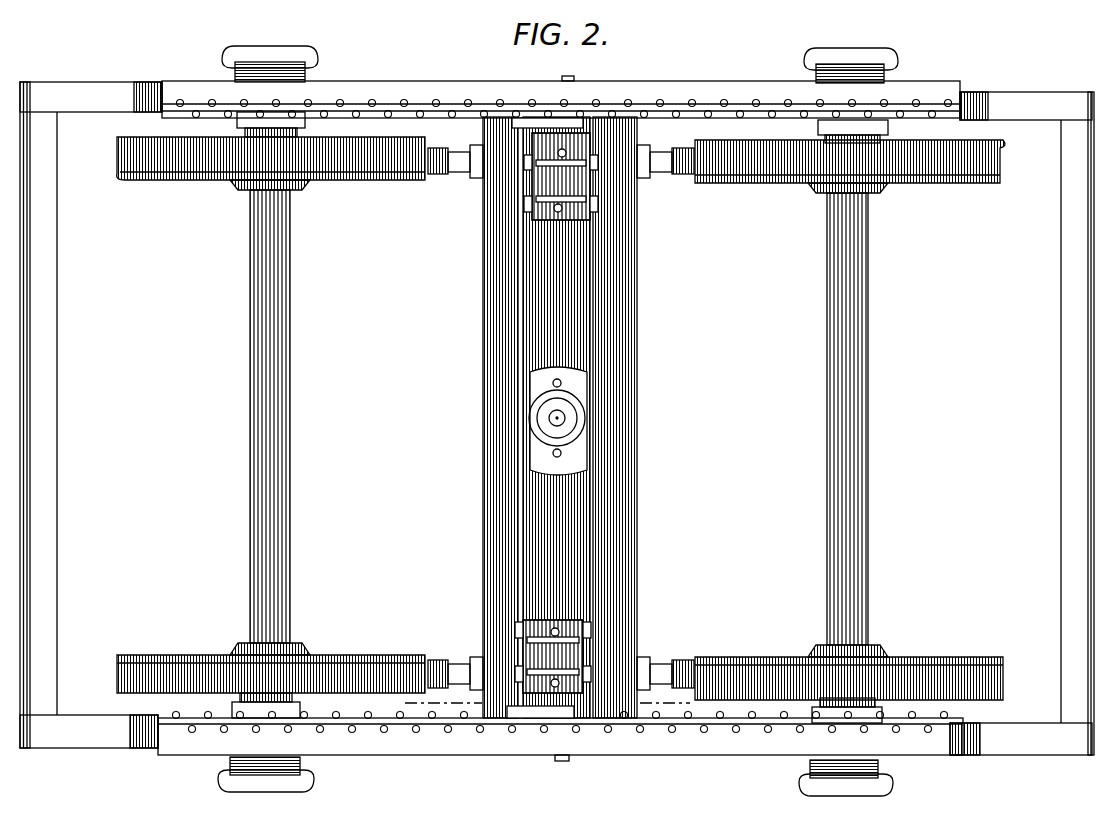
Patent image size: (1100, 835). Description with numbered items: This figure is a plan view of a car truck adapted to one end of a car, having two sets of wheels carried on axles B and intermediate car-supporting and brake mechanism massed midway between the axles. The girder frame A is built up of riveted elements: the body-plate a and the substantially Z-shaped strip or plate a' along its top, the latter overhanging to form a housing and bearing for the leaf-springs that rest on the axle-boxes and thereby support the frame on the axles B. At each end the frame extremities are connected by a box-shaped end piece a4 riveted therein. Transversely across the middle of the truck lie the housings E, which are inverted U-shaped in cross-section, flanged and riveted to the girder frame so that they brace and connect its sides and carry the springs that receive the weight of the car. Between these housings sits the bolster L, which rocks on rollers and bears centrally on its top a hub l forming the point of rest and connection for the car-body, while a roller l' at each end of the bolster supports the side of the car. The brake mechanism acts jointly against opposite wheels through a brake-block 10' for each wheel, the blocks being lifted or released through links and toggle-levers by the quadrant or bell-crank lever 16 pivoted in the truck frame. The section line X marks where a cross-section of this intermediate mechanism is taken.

The frame A is at (940, 93).
The body-plate a is at (525, 415).
The Z strip or plate a' is at (560, 425).
The box-shaped end piece a4 is at (1061, 348).
The axles B is at (561, 421).
The brake-block 10' is at (561, 417).
The housings E is at (483, 365).
The bolster L is at (588, 506).
The hub l is at (522, 421).
The roller l' is at (588, 413).
The brake quadrant or bell-crank lever 16 is at (540, 118).
The section line x x X is at (546, 703).